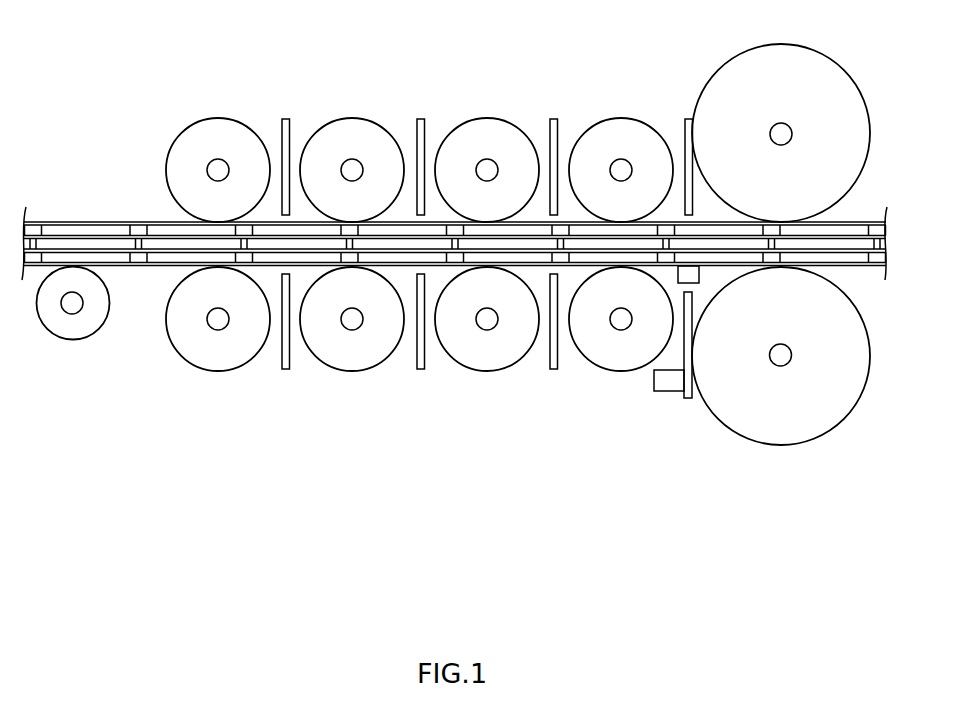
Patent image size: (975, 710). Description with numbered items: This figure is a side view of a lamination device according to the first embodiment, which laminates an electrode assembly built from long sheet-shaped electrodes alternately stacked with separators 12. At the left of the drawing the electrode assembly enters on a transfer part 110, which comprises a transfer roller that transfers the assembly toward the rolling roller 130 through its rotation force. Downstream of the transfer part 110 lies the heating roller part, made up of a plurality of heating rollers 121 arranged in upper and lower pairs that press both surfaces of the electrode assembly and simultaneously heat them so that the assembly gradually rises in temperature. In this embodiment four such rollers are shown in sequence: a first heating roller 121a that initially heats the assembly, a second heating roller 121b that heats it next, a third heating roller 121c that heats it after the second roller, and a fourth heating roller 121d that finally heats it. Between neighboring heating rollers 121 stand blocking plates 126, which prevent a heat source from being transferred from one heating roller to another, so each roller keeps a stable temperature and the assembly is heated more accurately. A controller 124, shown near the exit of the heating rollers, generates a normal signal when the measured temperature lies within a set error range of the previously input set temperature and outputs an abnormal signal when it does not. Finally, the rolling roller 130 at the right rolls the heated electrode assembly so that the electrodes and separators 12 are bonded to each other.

The transfer part 110 is at (70, 330).
The heating rollers 121 is at (419, 303).
The first heating roller 121a is at (220, 323).
The second heating roller 121b is at (353, 323).
The third heating roller 121c is at (488, 323).
The fourth heating roller 121d is at (621, 276).
The blocking plate 126 is at (421, 119).
The controller 124 is at (690, 272).
The separator 12 is at (665, 384).
The rolling roller 130 is at (778, 358).